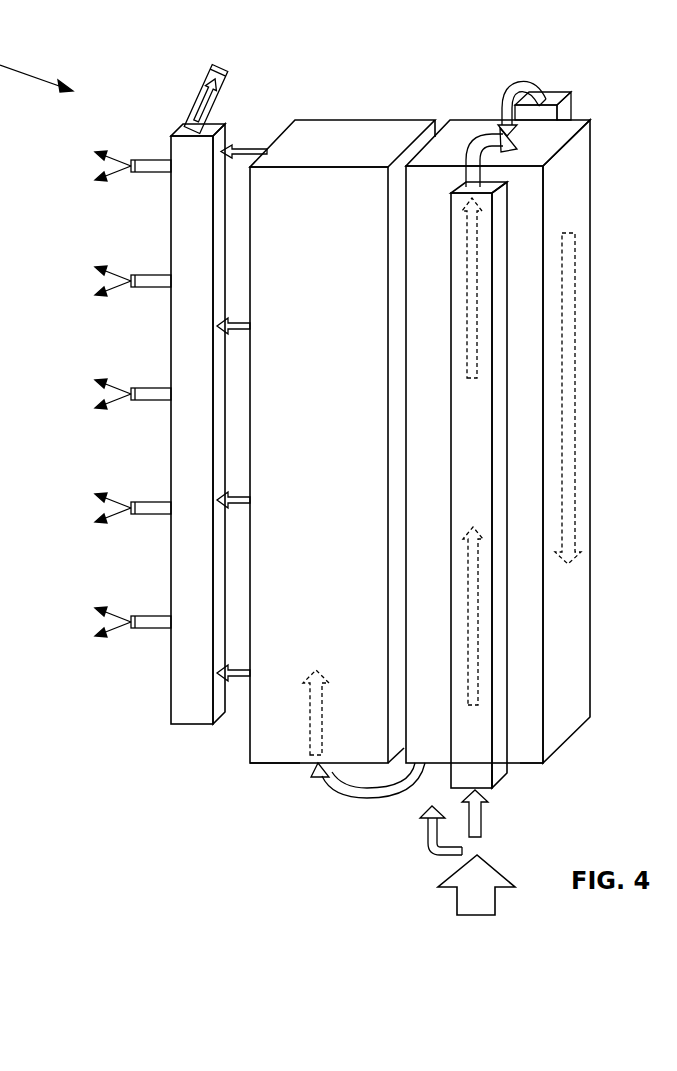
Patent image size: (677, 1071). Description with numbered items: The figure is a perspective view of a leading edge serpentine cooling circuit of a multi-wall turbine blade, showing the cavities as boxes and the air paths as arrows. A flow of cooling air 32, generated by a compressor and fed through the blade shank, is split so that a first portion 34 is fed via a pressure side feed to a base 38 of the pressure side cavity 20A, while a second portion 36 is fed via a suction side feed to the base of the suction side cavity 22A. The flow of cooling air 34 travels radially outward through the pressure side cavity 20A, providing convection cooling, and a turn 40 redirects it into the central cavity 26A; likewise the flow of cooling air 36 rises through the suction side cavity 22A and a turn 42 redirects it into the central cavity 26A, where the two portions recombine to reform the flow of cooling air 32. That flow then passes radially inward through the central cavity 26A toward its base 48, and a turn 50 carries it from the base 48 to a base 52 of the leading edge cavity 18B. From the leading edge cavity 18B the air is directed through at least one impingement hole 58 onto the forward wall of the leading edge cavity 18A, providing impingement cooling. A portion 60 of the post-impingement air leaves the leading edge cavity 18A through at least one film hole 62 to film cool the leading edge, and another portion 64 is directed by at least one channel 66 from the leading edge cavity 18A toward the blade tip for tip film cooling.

The leading edge cavity 18A is at (198, 424).
The leading edge cavity 18B is at (342, 441).
The pressure side cavity 20A is at (479, 485).
The suction side cavity 22A is at (558, 93).
The central cavity 26A is at (498, 441).
The flow of cooling air 32 is at (322, 712).
The first portion of the flow of cooling air 34 is at (481, 827).
The second portion of the flow of cooling air 36 is at (427, 856).
The base of the pressure side cavity 38 is at (497, 780).
The turn 40 is at (466, 183).
The turn 42 is at (503, 106).
The base of the central cavity 48 is at (532, 764).
The turn 50 is at (335, 790).
The base of the leading edge cavity 52 is at (292, 765).
The impingement hole 58 is at (257, 143).
The portion of the post-impingement flow of cooling air 60 is at (130, 163).
The film hole 62 is at (152, 173).
The portion of the flow of cooling air 64 is at (190, 113).
The channel 66 is at (224, 70).